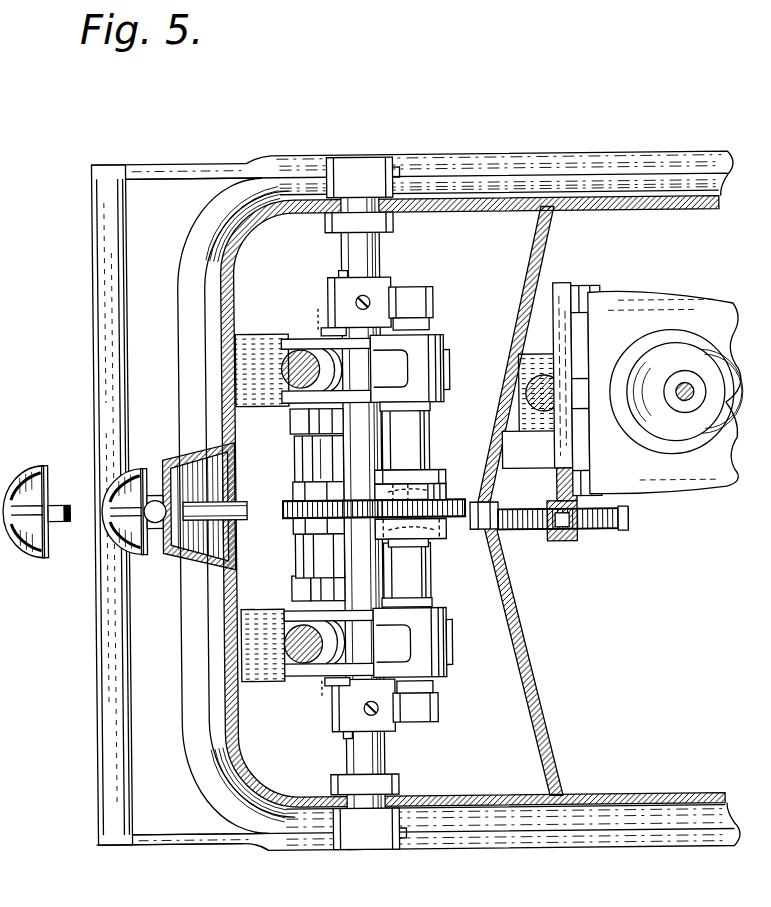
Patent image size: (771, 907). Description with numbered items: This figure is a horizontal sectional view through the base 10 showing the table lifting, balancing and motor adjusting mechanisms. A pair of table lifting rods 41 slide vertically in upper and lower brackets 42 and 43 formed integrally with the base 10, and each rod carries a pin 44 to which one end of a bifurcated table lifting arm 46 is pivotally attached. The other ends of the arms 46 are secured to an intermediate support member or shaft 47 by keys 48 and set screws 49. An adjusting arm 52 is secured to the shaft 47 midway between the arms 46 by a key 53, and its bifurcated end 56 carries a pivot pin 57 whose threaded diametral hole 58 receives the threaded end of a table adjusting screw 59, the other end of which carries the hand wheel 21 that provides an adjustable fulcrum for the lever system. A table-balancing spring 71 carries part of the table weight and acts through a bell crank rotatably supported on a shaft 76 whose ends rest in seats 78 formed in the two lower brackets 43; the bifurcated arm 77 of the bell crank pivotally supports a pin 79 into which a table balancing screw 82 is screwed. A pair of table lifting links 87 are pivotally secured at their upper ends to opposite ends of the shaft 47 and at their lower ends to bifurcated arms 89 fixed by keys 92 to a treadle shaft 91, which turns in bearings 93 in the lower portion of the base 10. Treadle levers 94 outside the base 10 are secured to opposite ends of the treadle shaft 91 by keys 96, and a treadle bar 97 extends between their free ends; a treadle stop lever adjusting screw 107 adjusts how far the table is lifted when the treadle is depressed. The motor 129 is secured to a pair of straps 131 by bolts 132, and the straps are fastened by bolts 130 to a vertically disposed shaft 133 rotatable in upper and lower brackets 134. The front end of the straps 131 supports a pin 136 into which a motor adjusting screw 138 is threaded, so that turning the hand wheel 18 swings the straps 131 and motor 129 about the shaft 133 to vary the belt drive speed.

The base 10 is at (490, 820).
The hand wheel 18 is at (105, 532).
The hand wheel 21 is at (38, 472).
The table lifting rods 41 is at (290, 380).
The upper brackets 42 is at (268, 333).
The lower brackets 43 is at (310, 336).
The pin 44 is at (322, 496).
The table lifting arms 46 is at (443, 353).
The intermediate support member or shaft 47 is at (426, 573).
The keys 48 is at (393, 405).
The set screws 49 is at (446, 365).
The adjusting arm 52 is at (494, 545).
The key 53 is at (423, 548).
The bifurcated end 56 is at (423, 470).
The pivot pin 57 is at (443, 485).
The threaded diametral hole 58 is at (443, 530).
The table adjusting screw 59 is at (446, 500).
The table-balancing spring 71 is at (428, 445).
The shaft 76 is at (302, 435).
The arm 77 is at (305, 545).
The seats 78 is at (293, 422).
The pin 79 is at (298, 460).
The table balancing screw 82 is at (292, 490).
The table lifting links 87 is at (435, 302).
The bifurcated arms 89 is at (383, 277).
The treadle shaft 91 is at (382, 250).
The keys 92 is at (341, 273).
The bearings 93 is at (396, 222).
The treadle levers 94 is at (176, 170).
The keys 96 is at (348, 157).
The treadle bar 97 is at (102, 613).
The treadle stop lever adjusting screw 107 is at (297, 532).
The motor 129 is at (682, 385).
The bolts 130 is at (590, 395).
The straps or arms 131 is at (573, 342).
The bolts 132 is at (602, 300).
The vertically disposed shaft 133 is at (565, 392).
The brackets 134 is at (537, 433).
The pin 136 is at (577, 540).
The motor adjusting screw 138 is at (602, 532).